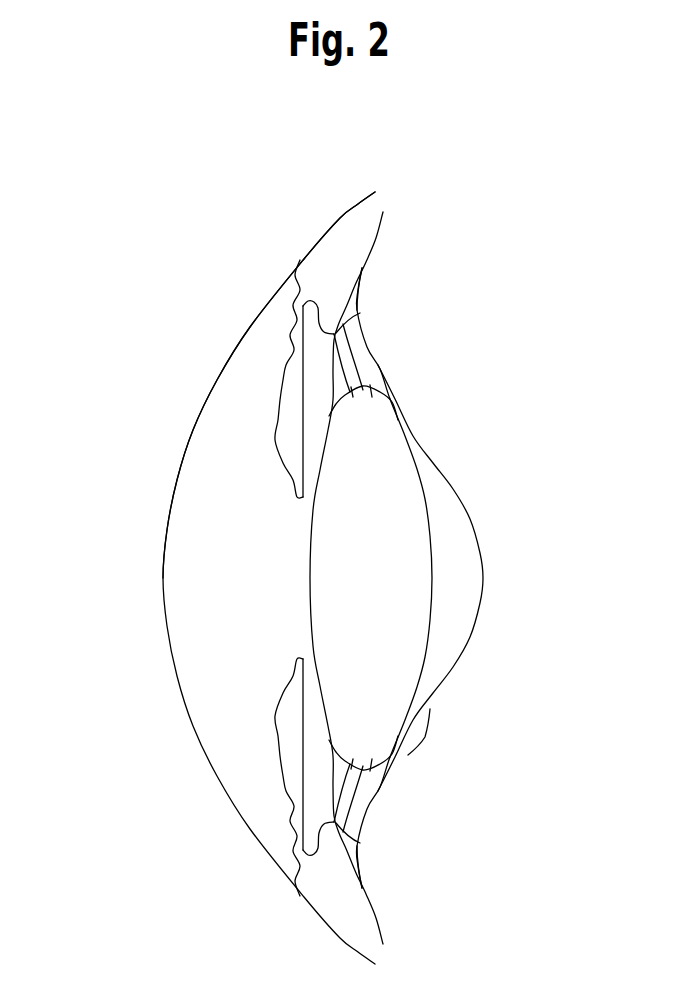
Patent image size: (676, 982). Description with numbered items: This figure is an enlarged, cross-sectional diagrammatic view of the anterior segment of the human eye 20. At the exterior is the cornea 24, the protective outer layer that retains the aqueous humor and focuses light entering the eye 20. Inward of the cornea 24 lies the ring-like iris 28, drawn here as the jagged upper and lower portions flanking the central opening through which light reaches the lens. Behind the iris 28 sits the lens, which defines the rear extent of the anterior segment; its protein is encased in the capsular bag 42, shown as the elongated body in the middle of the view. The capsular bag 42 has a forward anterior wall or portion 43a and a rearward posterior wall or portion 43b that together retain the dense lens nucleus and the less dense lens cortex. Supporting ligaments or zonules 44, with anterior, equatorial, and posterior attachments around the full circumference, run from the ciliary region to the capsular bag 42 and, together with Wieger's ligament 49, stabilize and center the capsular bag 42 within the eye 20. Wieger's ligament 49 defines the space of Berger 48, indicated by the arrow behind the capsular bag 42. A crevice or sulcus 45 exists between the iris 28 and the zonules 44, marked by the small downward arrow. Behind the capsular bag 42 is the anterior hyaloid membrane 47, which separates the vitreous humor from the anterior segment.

The eye 20 is at (188, 822).
The cornea 24 is at (197, 410).
The iris 28 is at (277, 450).
The capsular bag 42 is at (388, 484).
The anterior wall or portion 43a is at (300, 583).
The posterior capsule 43b is at (417, 546).
The zonules 44 is at (366, 363).
The sulcus 45 is at (315, 378).
The anterior hyaloid membrane 47 is at (362, 314).
The space of Berger 48 is at (454, 583).
The Wieger's ligament 49 is at (432, 733).